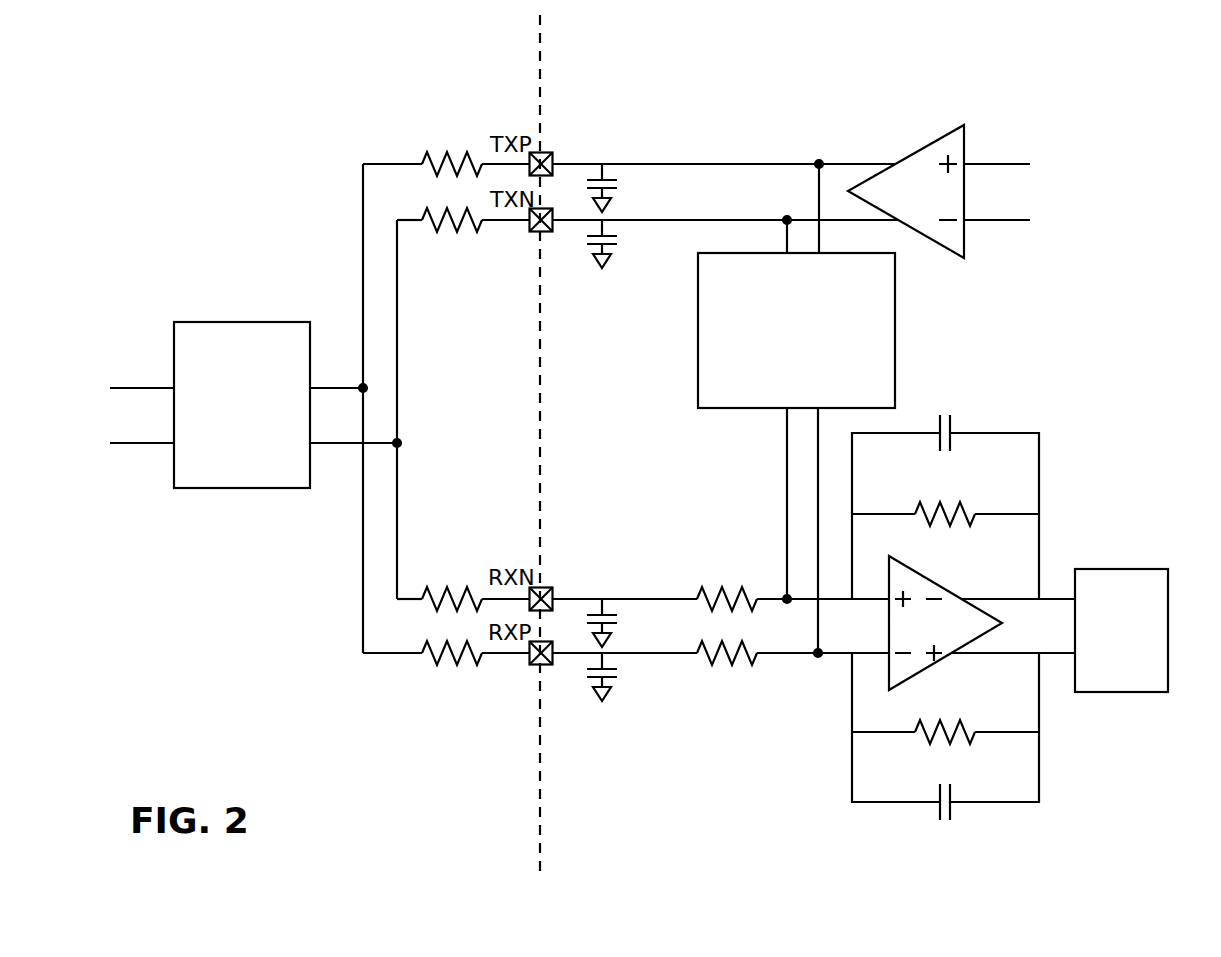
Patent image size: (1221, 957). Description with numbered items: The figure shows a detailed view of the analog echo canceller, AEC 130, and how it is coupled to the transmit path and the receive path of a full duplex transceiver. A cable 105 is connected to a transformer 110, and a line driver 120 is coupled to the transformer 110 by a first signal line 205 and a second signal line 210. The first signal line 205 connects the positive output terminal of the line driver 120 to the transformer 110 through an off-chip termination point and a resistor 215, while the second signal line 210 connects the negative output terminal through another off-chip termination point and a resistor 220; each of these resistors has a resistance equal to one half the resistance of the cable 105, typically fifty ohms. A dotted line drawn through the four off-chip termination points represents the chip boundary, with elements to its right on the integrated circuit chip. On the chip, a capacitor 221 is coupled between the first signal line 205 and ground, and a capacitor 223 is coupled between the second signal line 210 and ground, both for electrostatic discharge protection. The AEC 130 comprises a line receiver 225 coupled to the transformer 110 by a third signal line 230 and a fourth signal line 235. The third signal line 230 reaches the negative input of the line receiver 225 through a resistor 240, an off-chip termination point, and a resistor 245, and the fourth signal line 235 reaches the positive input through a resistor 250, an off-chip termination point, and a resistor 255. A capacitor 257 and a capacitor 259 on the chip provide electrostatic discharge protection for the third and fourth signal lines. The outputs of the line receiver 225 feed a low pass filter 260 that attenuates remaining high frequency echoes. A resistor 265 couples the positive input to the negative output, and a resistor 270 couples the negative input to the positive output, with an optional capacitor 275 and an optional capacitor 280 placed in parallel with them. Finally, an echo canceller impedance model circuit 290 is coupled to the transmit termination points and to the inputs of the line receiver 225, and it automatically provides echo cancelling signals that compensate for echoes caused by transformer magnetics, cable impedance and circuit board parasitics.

The cable 105 is at (142, 388).
The transformer 110 is at (252, 322).
The line driver 120 is at (966, 192).
The analog echo canceller (AEC) 130 is at (1074, 358).
The first signal line 205 is at (740, 164).
The second signal line 210 is at (733, 220).
The resistor 215 is at (446, 152).
The resistor 220 is at (447, 232).
The capacitor 221 is at (620, 186).
The capacitor 223 is at (620, 240).
The line receiver 225 is at (1003, 623).
The third signal line 230 is at (363, 564).
The fourth signal line 235 is at (397, 480).
The resistor 240 is at (742, 668).
The resistor 245 is at (448, 668).
The resistor 250 is at (727, 586).
The resistor 255 is at (452, 586).
The capacitor 257 is at (618, 684).
The capacitor 259 is at (618, 630).
The low pass filter 260 is at (1134, 568).
The resistor 265 is at (970, 522).
The resistor 270 is at (968, 740).
The optional capacitor 275 is at (956, 432).
The optional capacitor 280 is at (955, 814).
The echo canceller impedance model circuit 290 is at (744, 410).